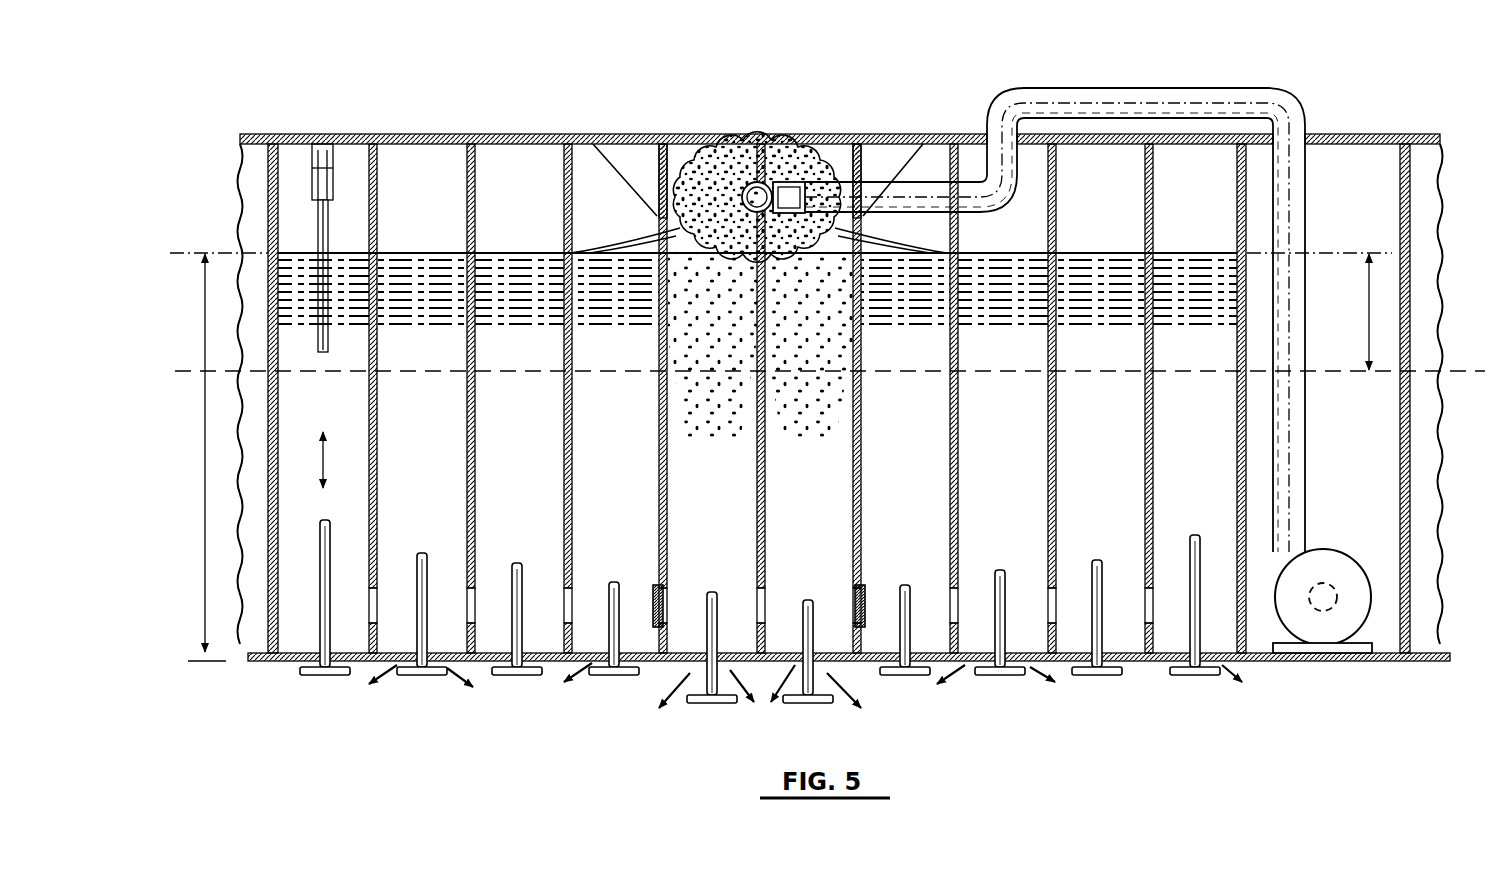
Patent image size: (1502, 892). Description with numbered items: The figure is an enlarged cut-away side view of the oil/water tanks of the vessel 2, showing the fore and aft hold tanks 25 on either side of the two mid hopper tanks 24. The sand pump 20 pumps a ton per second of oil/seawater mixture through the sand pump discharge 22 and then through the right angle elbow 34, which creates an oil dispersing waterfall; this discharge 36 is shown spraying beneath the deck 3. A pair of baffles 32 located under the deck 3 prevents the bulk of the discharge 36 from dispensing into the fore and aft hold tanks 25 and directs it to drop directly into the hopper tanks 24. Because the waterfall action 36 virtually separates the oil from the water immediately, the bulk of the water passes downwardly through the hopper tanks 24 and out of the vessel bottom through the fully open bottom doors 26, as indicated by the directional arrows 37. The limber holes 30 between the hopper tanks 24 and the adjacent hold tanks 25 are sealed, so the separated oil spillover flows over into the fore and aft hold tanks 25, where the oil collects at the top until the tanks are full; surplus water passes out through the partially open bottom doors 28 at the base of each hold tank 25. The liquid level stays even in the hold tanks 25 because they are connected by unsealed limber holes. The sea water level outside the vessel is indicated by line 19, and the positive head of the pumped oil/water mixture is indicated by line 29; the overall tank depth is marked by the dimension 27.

The vessel 2 is at (1260, 730).
The deck 3 is at (489, 131).
The sea water level line 19 is at (525, 367).
The sand pump 20 is at (1320, 567).
The sand pump discharge 22 is at (1177, 86).
The hopper tanks 24 is at (727, 533).
The fore and aft hold tanks 25 is at (580, 249).
The bottom doors 26 is at (804, 707).
The tank depth 27 is at (203, 431).
The bottom doors 28 is at (415, 680).
The positive head line 29 is at (1366, 317).
The limber holes 30 is at (652, 580).
The baffles 32 is at (666, 147).
The right angle elbow 34 is at (762, 179).
The discharge 36 is at (733, 137).
The directional arrows 37 is at (452, 674).